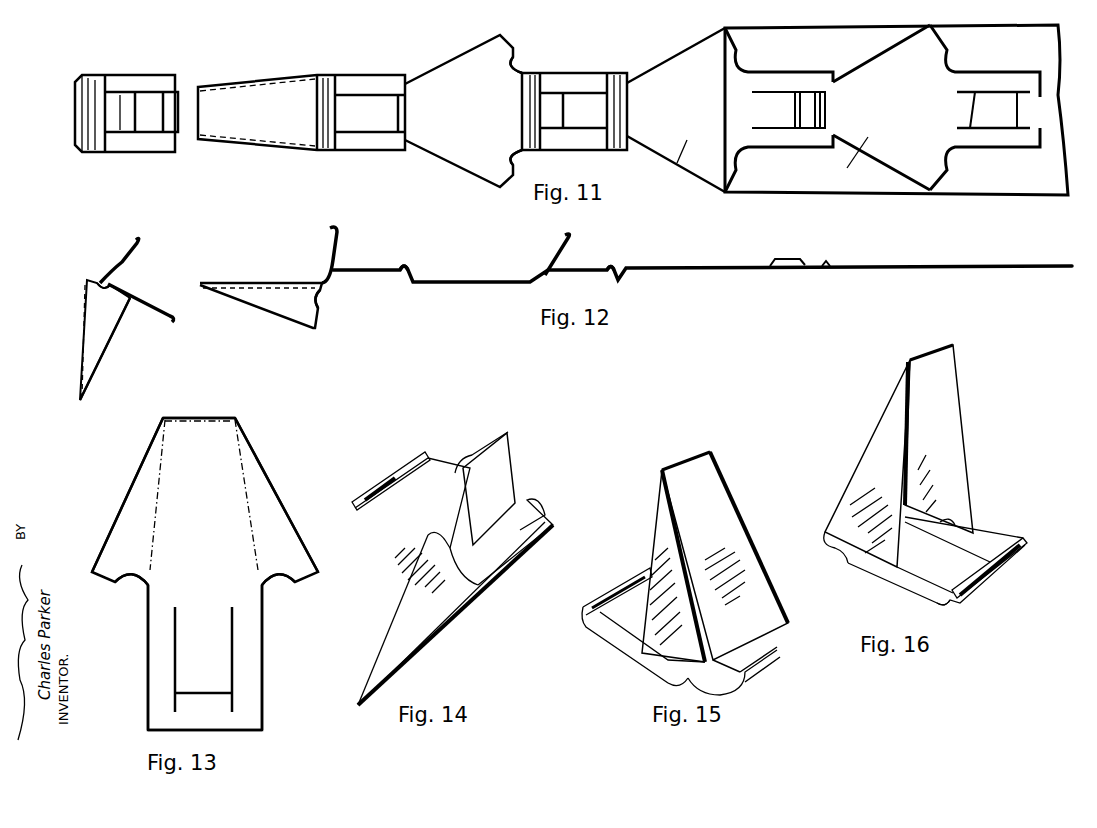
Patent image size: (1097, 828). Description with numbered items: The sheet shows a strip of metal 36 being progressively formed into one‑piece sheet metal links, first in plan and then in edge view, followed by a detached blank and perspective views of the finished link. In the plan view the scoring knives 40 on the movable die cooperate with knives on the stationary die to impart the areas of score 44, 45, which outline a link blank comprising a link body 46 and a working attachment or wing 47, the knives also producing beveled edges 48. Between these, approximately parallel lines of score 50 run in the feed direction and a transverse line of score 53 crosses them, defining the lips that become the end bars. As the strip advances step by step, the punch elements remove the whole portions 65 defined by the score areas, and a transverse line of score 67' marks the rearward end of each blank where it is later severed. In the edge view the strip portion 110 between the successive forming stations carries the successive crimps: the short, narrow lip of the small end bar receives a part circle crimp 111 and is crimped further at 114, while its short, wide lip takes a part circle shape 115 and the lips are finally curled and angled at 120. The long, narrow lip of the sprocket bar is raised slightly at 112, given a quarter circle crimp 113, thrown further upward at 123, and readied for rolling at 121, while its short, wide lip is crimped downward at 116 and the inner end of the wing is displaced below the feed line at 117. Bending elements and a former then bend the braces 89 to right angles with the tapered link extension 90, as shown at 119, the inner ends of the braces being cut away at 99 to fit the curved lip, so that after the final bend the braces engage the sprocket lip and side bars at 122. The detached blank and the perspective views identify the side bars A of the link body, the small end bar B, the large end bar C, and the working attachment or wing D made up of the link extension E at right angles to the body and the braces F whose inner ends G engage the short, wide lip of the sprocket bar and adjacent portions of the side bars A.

In FIG. 11, the strip of metal 36 is at (1035, 193).
In FIG. 11, the scoring knives or chisels 40 is at (461, 55).
In FIG. 11, the area of score 44 is at (1017, 71).
In FIG. 11, the area of score 45 is at (893, 60).
In FIG. 11, the link body 46 is at (773, 137).
In FIG. 11, the working attachment or wing 47 is at (764, 161).
In FIG. 11, the beveled edges 48 is at (439, 155).
In FIG. 11, the lines of score 50 is at (974, 97).
In FIG. 11, the line of score 53 is at (1017, 115).
In FIG. 11, the removed portions 65 is at (815, 40).
In FIG. 11, the line of score 67' is at (644, 122).
In FIG. 12, the line of score 67' is at (534, 288).
In FIG. 12, the braces 89 is at (100, 343).
In FIG. 12, the link extension 90 is at (87, 342).
In FIG. 11, the cut-away portions 99 is at (518, 69).
In FIG. 12, the intermediate strip portion 110 is at (444, 283).
In FIG. 12, the part circle crimp 111 is at (829, 263).
In FIG. 12, the raised long, narrow lip 112 is at (800, 263).
In FIG. 12, the quarter circle crimp 113 is at (807, 258).
In FIG. 12, the additional crimp 114 is at (612, 265).
In FIG. 12, the part circle shape 115 is at (611, 280).
In FIG. 12, the crimped short, wide lip 116 is at (546, 273).
In FIG. 12, the displaced inner end of wing 117 is at (529, 283).
In FIG. 11, the bent braces position 119 is at (259, 146).
In FIG. 12, the bent braces position 119 is at (302, 318).
In FIG. 12, the curled small end bar 120 is at (402, 265).
In FIG. 12, the sprocket bar ready for rolling 121 is at (332, 260).
In FIG. 12, the brace engagement 122 is at (130, 287).
In FIG. 12, the upwardly thrown long, narrow lip 123 is at (558, 250).
In FIG. 13, the side bars A is at (160, 648).
In FIG. 14, the side bars A is at (452, 468).
In FIG. 15, the side bars A is at (633, 643).
In FIG. 16, the side bars A is at (990, 542).
In FIG. 13, the small end bar B is at (222, 722).
In FIG. 14, the small end bar B is at (383, 495).
In FIG. 15, the small end bar B is at (624, 598).
In FIG. 16, the small end bar B is at (1000, 578).
In FIG. 13, the large end bar C is at (218, 588).
In FIG. 14, the large end bar C is at (500, 525).
In FIG. 15, the large end bar C is at (760, 668).
In FIG. 16, the large end bar C is at (838, 548).
In FIG. 13, the working attachment or wing D is at (228, 498).
In FIG. 14, the working attachment or wing D is at (402, 670).
In FIG. 15, the working attachment or wing D is at (742, 526).
In FIG. 13, the link extension E is at (199, 481).
In FIG. 14, the link extension E is at (466, 604).
In FIG. 15, the link extension E is at (725, 557).
In FIG. 16, the link extension E is at (921, 400).
In FIG. 13, the braces F is at (185, 495).
In FIG. 14, the braces F is at (398, 626).
In FIG. 15, the braces F is at (660, 538).
In FIG. 16, the braces F is at (878, 466).
In FIG. 13, the inner ends of braces G is at (100, 582).
In FIG. 14, the inner ends of braces G is at (414, 540).
In FIG. 15, the inner ends of braces G is at (655, 672).
In FIG. 16, the inner ends of braces G is at (950, 520).